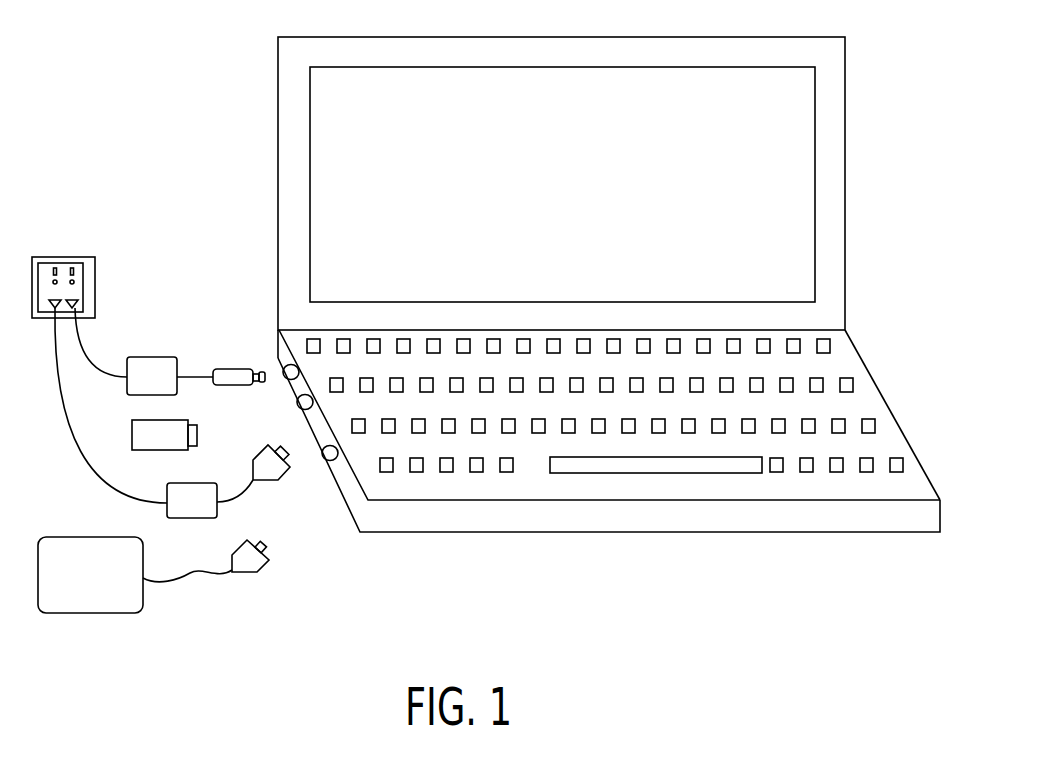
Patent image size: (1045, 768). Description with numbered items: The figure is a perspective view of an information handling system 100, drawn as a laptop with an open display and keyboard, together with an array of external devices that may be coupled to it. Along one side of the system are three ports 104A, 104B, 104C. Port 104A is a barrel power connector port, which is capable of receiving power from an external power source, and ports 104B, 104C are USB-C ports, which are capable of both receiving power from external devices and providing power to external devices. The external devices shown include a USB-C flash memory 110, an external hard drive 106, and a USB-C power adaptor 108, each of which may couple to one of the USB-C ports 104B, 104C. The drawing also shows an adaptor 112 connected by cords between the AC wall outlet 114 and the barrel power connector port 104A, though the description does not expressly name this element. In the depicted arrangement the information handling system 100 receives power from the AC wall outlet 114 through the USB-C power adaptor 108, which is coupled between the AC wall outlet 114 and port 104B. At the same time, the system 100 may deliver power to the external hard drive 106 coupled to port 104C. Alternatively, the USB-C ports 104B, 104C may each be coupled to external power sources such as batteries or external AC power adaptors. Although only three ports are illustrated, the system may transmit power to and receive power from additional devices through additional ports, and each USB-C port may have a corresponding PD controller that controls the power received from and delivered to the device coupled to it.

The information handling system 100 is at (575, 284).
The barrel power connector port 104A is at (283, 366).
The USB-C port 104B is at (300, 405).
The USB-C port 104C is at (327, 465).
The external hard drive 106 is at (143, 600).
The USB-C power adaptor 108 is at (280, 481).
The USB-C flash memory 110 is at (132, 430).
The power adapter 112 is at (162, 357).
The AC wall outlet 114 is at (65, 257).